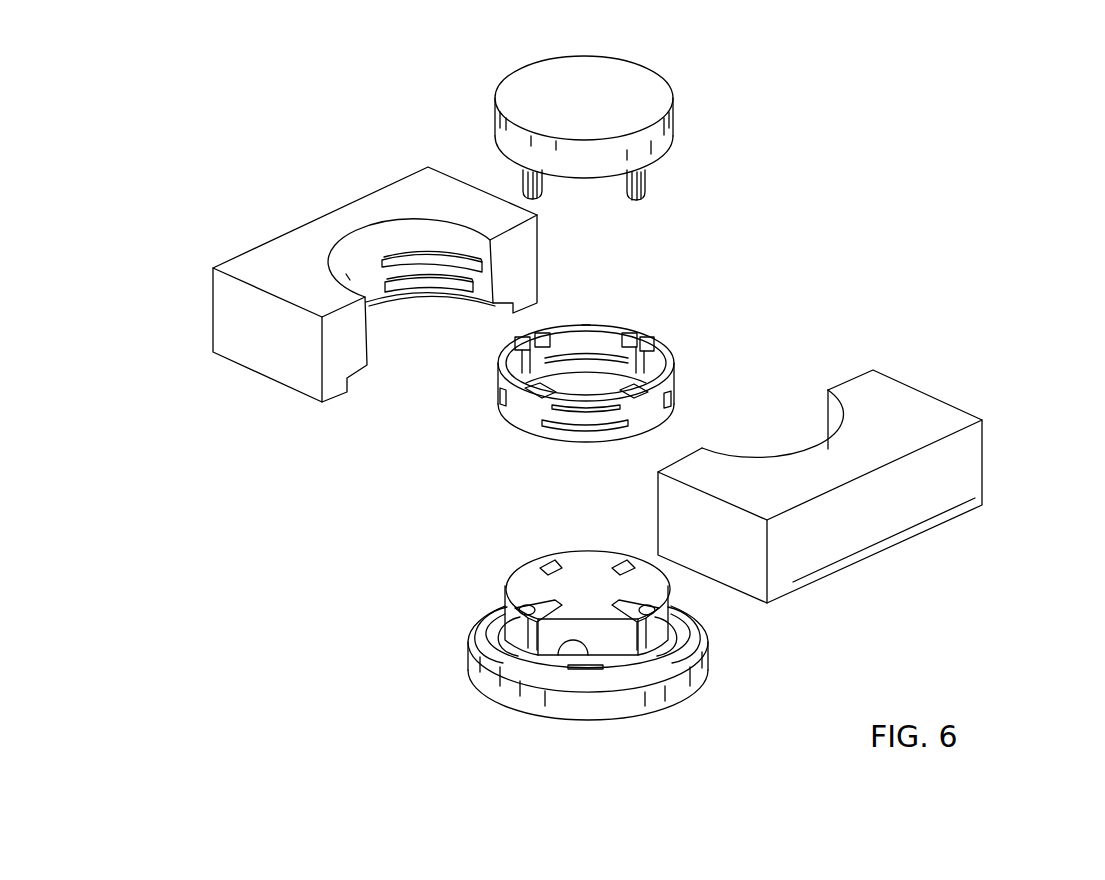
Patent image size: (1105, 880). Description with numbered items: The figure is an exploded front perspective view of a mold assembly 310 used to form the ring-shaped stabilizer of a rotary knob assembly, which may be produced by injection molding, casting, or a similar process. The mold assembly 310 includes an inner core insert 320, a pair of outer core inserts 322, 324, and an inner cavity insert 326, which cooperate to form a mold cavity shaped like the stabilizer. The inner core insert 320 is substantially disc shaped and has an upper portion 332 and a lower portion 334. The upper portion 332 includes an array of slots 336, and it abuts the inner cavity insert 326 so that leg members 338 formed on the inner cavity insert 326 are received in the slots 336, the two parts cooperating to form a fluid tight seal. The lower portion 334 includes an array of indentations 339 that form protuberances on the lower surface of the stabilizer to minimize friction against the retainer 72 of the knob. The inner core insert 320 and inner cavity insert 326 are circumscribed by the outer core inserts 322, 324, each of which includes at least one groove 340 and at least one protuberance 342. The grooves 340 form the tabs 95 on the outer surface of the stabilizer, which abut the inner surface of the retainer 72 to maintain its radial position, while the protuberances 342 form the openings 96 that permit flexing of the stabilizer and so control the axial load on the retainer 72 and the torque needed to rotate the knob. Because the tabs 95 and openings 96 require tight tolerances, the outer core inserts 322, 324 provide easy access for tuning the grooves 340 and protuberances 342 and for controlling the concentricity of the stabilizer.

The mold assembly 310 is at (221, 138).
The inner cavity insert 326 is at (624, 133).
The leg members 338 is at (543, 185).
The outer core insert 324 is at (375, 307).
The groove 340 is at (483, 270).
The protuberance 342 is at (427, 294).
The retainer 72 is at (591, 406).
The tabs 95 is at (671, 373).
The openings 96 is at (543, 421).
The outer core insert 322 is at (986, 477).
The inner core insert 320 is at (590, 631).
The upper portion 332 is at (523, 588).
The lower portion 334 is at (673, 699).
The slots 336 is at (625, 557).
The indentations 339 is at (490, 612).